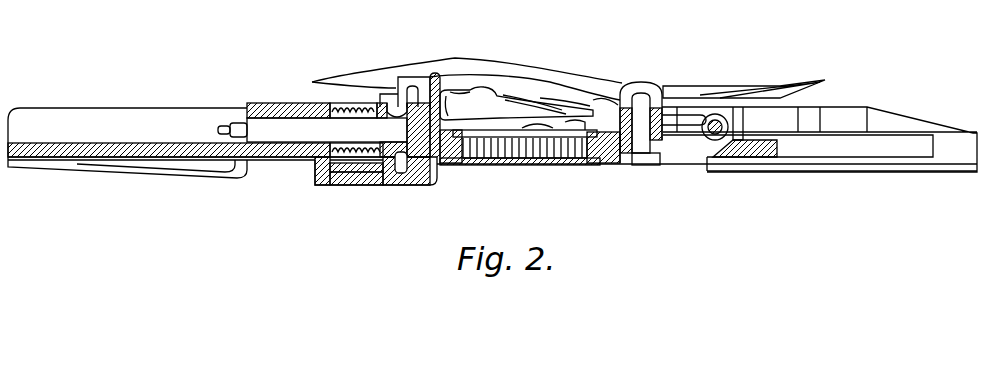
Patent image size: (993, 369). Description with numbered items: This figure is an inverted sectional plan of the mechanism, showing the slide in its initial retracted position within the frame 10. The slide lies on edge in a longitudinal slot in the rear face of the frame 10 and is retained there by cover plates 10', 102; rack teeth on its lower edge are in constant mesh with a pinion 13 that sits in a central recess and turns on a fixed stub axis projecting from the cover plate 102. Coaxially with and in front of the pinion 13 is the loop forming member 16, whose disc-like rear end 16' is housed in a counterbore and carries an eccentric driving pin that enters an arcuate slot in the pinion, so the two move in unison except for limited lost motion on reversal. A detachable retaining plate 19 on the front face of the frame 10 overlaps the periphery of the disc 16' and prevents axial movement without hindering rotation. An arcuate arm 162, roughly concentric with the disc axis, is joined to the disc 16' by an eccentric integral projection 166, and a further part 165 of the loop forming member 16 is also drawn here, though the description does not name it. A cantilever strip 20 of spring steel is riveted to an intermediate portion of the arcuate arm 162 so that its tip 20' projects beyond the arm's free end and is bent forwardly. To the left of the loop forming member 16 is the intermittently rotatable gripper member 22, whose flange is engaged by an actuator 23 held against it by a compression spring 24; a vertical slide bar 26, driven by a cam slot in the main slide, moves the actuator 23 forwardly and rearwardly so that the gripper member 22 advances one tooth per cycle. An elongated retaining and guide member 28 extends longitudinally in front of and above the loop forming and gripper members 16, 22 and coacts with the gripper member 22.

The frame 10 is at (492, 138).
The cover plate 10' is at (127, 185).
The cover plate 102 is at (720, 165).
The pinion 13 is at (487, 153).
The loop forming member 16 is at (516, 81).
The arcuate arm 162 is at (458, 93).
The leaf spring 165 is at (503, 92).
The eccentric integral projection 166 is at (557, 127).
The disc 16' is at (580, 159).
The retaining plate 19 is at (610, 103).
The cantilever strip 20 is at (571, 77).
The tip 20' is at (605, 84).
The gripper member 22 is at (401, 175).
The actuator 23 is at (382, 172).
The compression spring 24 is at (345, 104).
The vertical slide bar 26 is at (345, 172).
The retaining and guide member 28 is at (340, 83).